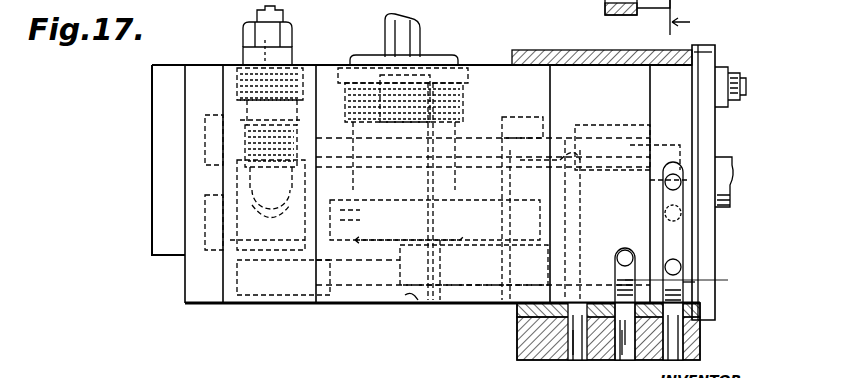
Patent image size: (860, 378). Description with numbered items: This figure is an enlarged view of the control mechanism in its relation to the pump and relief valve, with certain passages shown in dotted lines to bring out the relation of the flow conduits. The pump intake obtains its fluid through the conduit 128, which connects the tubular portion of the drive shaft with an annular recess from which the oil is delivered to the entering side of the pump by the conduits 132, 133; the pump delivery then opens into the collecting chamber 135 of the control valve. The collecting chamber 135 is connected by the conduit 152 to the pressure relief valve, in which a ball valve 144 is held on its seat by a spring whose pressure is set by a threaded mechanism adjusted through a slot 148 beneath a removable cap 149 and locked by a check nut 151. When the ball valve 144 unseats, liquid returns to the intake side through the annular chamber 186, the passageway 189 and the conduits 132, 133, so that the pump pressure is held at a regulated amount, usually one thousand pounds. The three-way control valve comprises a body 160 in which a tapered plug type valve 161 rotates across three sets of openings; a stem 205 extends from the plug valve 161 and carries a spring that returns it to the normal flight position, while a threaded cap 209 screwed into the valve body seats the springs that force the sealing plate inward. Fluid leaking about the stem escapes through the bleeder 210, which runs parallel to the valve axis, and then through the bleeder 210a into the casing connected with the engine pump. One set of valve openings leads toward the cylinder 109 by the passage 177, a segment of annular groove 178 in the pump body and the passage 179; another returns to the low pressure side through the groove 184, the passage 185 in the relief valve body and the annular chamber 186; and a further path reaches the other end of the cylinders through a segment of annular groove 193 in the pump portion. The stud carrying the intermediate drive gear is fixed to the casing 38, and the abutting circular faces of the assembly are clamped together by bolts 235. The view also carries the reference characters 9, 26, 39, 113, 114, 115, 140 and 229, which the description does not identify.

The nozzle 9 is at (686, 17).
The fitting 26 is at (637, 20).
The casing 38 is at (441, 6).
The port 39 is at (361, 12).
The cylinder 109 is at (571, 6).
The passage 113 is at (531, 6).
The passage 114 is at (496, 6).
The cover plate 115 is at (572, 70).
The conduit 128 is at (680, 338).
The conduit 132 is at (677, 240).
The conduit 133 is at (681, 266).
The collecting chamber 135 is at (520, 118).
The valve chamber 140 is at (245, 143).
The ball valve 144 is at (243, 251).
The slot 148 is at (283, 13).
The removable cap 149 is at (238, 90).
The check nut 151 is at (286, 35).
The conduit 152 is at (375, 282).
The body 160 is at (480, 297).
The tapered plug type valve 161 is at (410, 231).
The passage 177 is at (540, 130).
The segment of annular groove 178 is at (522, 340).
The passage 179 is at (580, 348).
The groove 184 is at (625, 345).
The passage 185 is at (598, 128).
The annular chamber 186 is at (203, 146).
The passageway 189 is at (420, 182).
The segment of annular groove 193 is at (694, 283).
The stem 205 is at (420, 30).
The threaded cap 209 is at (447, 58).
The bleeder 210 is at (425, 208).
The bleeder 210a is at (410, 300).
The passage 229 is at (200, 70).
The bolts 235 is at (740, 76).